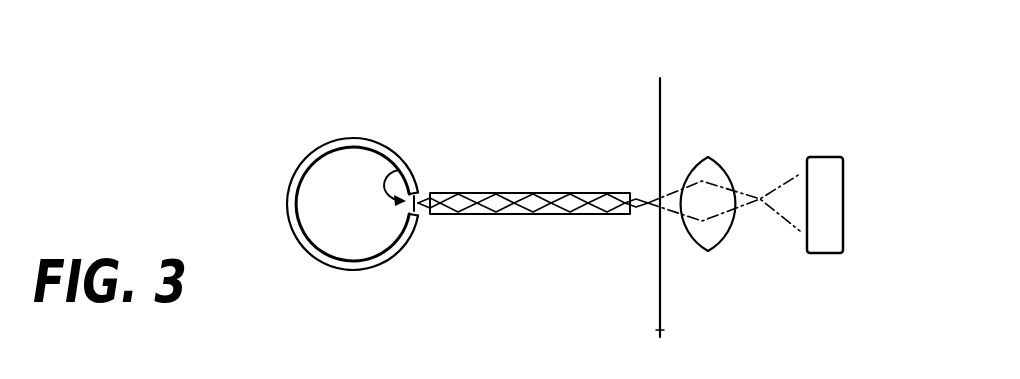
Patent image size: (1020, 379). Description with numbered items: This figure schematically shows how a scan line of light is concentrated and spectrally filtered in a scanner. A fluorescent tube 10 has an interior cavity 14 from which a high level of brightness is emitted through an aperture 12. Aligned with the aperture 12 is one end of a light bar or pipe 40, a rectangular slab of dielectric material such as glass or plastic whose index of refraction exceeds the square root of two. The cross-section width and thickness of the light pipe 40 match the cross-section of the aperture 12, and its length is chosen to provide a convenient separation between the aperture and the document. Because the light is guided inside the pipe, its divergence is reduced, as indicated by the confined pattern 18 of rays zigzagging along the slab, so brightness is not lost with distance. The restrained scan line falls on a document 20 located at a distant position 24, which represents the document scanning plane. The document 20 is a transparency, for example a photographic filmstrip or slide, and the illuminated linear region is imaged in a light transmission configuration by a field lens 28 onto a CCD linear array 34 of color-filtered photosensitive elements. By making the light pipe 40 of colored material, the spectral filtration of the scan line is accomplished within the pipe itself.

The fluorescent tube 10 is at (317, 143).
The aperture 12 is at (403, 168).
The cavity 14 is at (338, 238).
The confined pattern 18 is at (513, 193).
The document 20 is at (660, 96).
The distant position 24 is at (660, 333).
The field lens 28 is at (709, 157).
The CCD linear array 34 is at (830, 157).
The light bar or pipe 40 is at (560, 213).